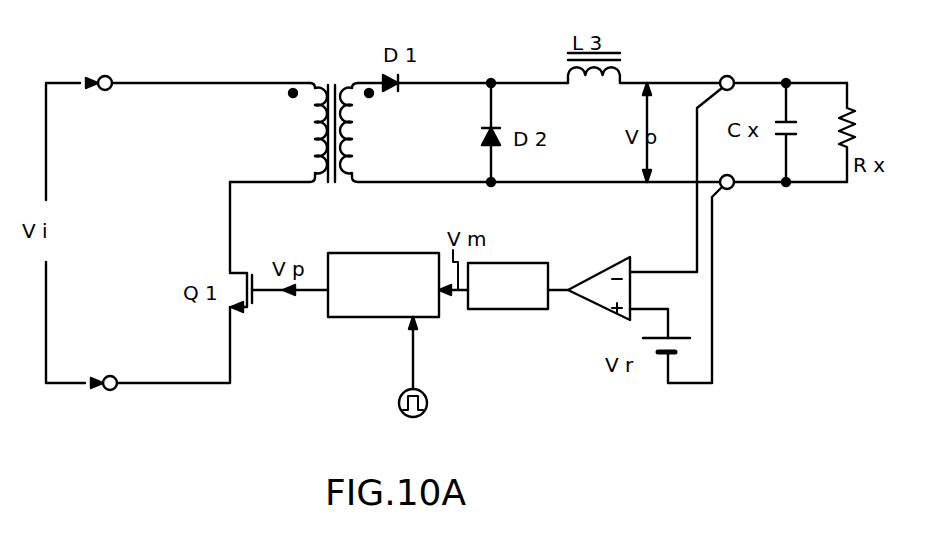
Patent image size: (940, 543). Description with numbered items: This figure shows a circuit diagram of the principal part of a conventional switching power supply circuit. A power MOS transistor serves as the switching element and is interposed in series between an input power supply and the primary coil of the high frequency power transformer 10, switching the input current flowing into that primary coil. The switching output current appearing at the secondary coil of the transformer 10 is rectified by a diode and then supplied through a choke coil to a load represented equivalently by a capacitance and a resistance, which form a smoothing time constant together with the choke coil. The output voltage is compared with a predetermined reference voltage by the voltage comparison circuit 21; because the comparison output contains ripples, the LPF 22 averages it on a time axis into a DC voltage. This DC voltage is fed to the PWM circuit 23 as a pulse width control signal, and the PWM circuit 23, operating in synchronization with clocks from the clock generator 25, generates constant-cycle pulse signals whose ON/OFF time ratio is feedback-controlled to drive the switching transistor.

The high frequency power transformer 10 is at (333, 78).
The voltage comparison circuit 21 is at (593, 306).
The LPF (low pass filter) 22 is at (480, 309).
The PWM (pulse width modulation) circuit 23 is at (342, 317).
The clock generator 25 is at (428, 403).